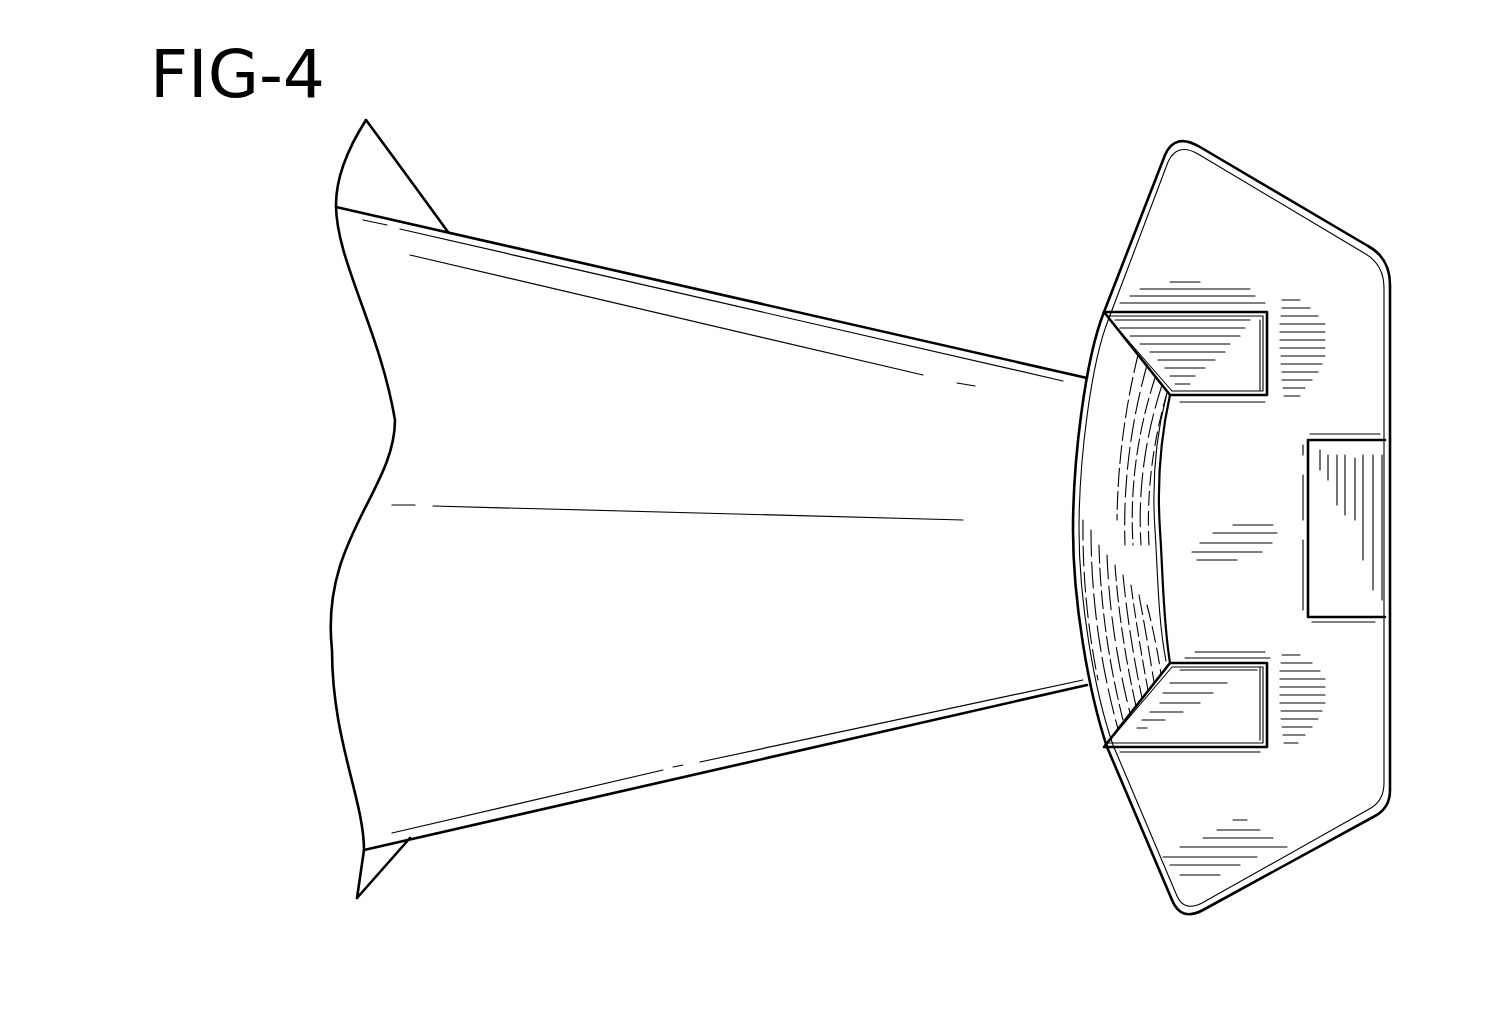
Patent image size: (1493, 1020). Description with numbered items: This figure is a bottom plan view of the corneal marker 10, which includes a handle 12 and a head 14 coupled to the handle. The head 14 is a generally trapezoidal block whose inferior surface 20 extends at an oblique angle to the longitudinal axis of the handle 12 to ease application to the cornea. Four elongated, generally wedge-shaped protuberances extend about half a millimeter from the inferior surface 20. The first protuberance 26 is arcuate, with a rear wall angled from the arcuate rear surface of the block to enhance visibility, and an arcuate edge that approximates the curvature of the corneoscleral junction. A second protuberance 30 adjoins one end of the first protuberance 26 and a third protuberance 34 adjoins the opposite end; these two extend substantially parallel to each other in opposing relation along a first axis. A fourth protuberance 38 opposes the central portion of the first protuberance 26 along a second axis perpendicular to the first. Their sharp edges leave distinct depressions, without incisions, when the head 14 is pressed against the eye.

The marker 10 is at (651, 194).
The handle 12 is at (736, 772).
The head 14 is at (1326, 205).
The inferior surface 20 is at (1353, 755).
The first protuberance 26 is at (1097, 690).
The second protuberance 30 is at (1180, 312).
The third protuberance 34 is at (1210, 748).
The fourth protuberance 38 is at (1392, 520).